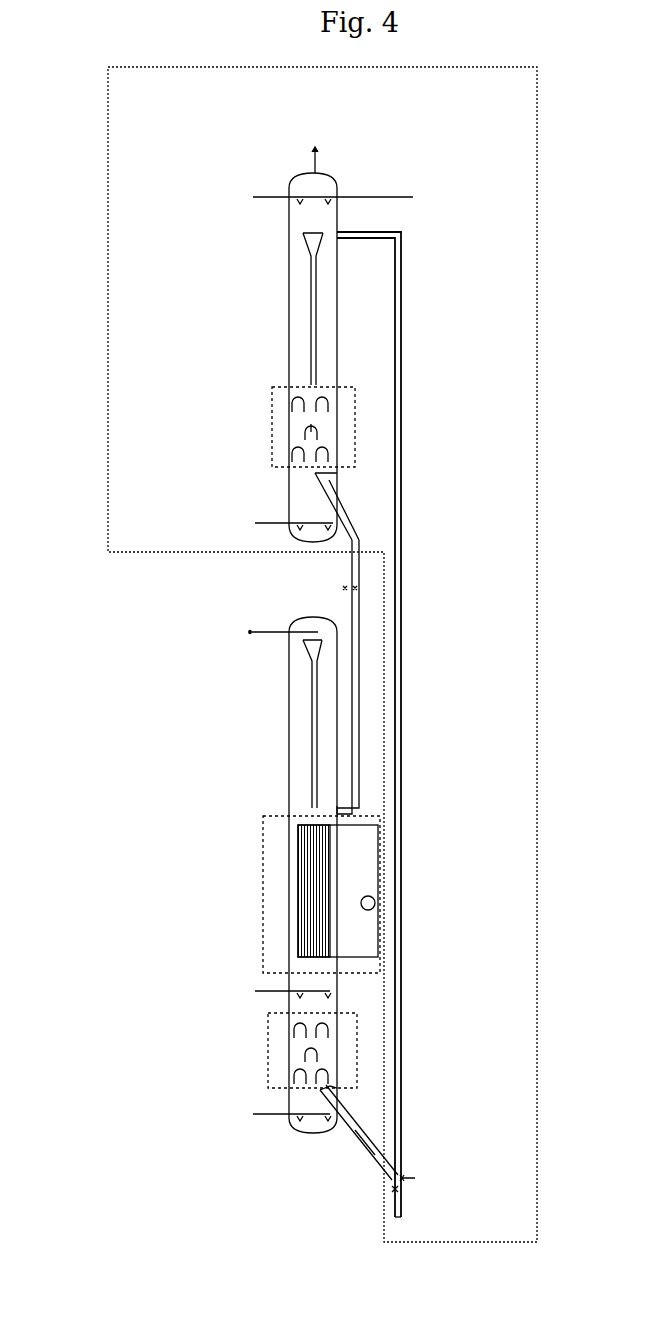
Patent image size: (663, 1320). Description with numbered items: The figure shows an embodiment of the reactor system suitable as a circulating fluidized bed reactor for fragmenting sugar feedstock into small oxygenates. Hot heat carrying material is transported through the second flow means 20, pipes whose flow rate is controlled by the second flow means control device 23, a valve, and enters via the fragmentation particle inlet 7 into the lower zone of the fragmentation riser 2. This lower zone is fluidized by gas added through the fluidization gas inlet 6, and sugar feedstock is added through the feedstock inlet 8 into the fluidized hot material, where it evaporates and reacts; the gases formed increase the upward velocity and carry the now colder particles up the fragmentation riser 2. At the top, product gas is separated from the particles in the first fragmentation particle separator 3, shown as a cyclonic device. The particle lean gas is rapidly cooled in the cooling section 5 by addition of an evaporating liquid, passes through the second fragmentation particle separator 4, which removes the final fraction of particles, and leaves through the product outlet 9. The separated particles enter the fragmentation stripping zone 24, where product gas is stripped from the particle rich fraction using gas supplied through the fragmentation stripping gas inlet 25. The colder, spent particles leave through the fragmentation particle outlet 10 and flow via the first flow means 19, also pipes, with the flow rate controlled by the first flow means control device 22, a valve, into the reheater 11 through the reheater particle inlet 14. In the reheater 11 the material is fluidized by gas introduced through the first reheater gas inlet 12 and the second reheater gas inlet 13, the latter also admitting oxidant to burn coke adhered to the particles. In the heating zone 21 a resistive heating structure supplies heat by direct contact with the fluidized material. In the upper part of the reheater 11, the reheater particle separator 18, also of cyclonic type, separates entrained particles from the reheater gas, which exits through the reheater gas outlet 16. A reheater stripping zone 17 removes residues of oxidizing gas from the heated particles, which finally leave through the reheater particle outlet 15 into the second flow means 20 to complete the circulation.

The fragmentation riser 2 is at (402, 690).
The first fragmentation particle separator 3 is at (307, 238).
The second fragmentation particle separator 4 is at (300, 182).
The cooling section 5 is at (340, 197).
The fluidization gas inlet 6 is at (412, 1170).
The fragmentation particle inlet 7 is at (380, 1172).
The feedstock inlet 8 is at (404, 1200).
The product outlet 9 is at (318, 155).
The fragmentation particle outlet 10 is at (322, 476).
The reheater 11 is at (287, 777).
The first reheater gas inlet 12 is at (298, 1105).
The second reheater gas inlet 13 is at (305, 992).
The reheater particle inlet 14 is at (336, 807).
The reheater particle outlet 15 is at (340, 1088).
The reheater gas outlet 16 is at (265, 628).
The reheater stripping zone 17 is at (266, 1052).
The reheater particle separator 18 is at (307, 651).
The first flow means 19 is at (359, 669).
The second flow means 20 is at (365, 1148).
The heating zone 21 is at (262, 885).
The first flow means control device 22 is at (350, 587).
The second flow means control device 23 is at (372, 1120).
The fragmentation stripping zone 24 is at (265, 420).
The fragmentation stripping gas inlet 25 is at (308, 517).